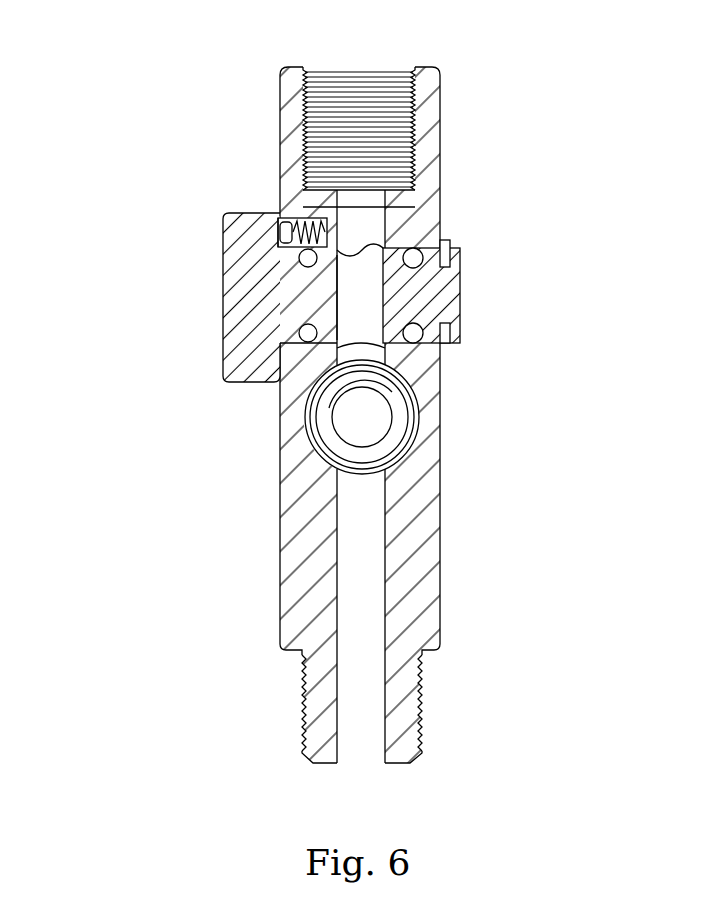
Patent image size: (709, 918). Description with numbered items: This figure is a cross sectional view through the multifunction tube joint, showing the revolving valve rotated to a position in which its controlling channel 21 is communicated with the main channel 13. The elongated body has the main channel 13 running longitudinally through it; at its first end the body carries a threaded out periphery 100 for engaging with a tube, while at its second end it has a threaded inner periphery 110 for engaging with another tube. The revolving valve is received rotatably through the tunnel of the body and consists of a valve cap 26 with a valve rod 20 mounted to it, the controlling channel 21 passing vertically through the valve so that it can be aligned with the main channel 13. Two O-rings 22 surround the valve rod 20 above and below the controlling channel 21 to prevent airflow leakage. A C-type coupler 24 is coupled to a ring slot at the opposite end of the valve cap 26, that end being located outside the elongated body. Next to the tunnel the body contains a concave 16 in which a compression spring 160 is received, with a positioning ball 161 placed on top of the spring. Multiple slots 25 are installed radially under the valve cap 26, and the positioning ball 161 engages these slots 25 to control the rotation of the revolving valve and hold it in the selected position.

The threaded out periphery 100 is at (412, 707).
The threaded inner periphery 110 is at (413, 122).
The main channel 13 is at (372, 224).
The concave 16 is at (235, 186).
The compression spring 160 is at (305, 226).
The positioning ball 161 is at (283, 226).
The slots 25 is at (283, 240).
The valve cap 26 is at (238, 295).
The valve rod 20 is at (452, 297).
The C-type coupler 24 is at (447, 345).
The O-ring 22 is at (308, 345).
The controlling channel 21 is at (348, 303).